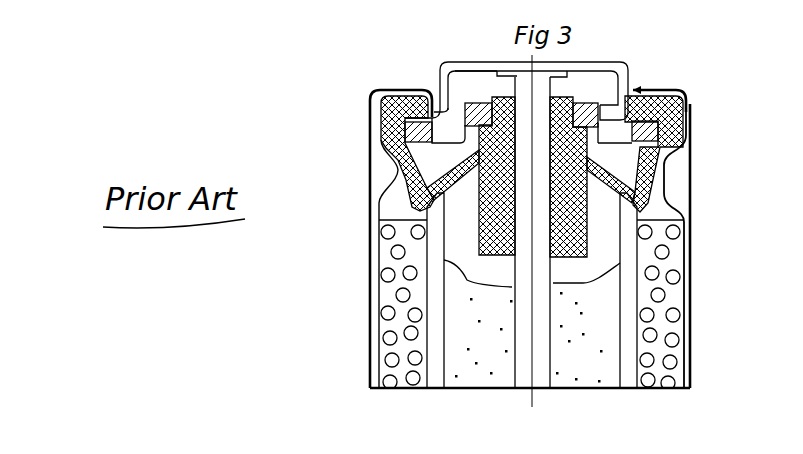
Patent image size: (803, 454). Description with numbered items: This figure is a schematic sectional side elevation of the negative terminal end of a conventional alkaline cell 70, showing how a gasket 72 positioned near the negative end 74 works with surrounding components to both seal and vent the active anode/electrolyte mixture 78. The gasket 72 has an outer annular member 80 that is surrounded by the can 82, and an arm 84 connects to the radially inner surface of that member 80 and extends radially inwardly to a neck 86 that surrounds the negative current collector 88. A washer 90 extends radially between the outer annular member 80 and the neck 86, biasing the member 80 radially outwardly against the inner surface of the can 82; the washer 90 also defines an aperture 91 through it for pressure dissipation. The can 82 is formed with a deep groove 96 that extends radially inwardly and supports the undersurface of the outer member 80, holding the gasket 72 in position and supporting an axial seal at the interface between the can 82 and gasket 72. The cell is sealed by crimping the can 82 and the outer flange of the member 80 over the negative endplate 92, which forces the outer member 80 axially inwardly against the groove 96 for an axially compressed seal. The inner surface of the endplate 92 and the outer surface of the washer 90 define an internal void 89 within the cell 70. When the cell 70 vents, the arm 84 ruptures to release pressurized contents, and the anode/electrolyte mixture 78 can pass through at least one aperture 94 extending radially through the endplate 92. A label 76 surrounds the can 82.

The alkaline cell 70 is at (330, 64).
The gasket 72 is at (493, 95).
The negative end 74 is at (569, 59).
The label 76 is at (692, 238).
The anode/electrolyte mixture 78 is at (594, 390).
The outer annular member 80 is at (688, 108).
The can 82 is at (684, 143).
The arm 84 is at (460, 178).
The neck 86 is at (585, 218).
The negative current collector 88 is at (553, 91).
The internal void 89 is at (472, 91).
The washer 90 is at (585, 102).
The aperture 91 is at (450, 139).
The negative endplate 92 is at (607, 59).
The aperture 94 is at (628, 82).
The deep groove 96 is at (663, 173).